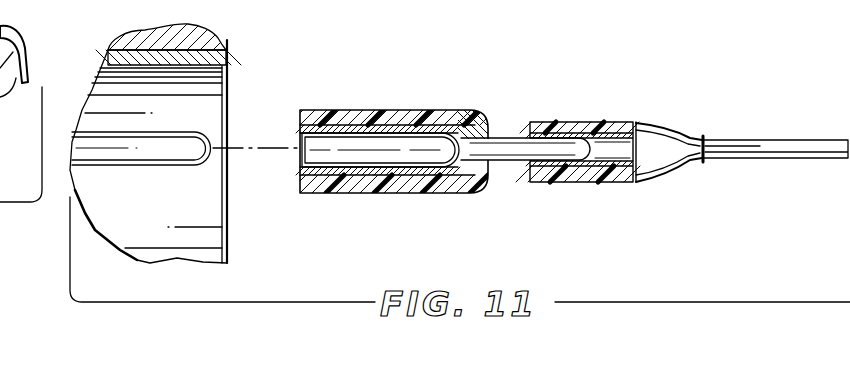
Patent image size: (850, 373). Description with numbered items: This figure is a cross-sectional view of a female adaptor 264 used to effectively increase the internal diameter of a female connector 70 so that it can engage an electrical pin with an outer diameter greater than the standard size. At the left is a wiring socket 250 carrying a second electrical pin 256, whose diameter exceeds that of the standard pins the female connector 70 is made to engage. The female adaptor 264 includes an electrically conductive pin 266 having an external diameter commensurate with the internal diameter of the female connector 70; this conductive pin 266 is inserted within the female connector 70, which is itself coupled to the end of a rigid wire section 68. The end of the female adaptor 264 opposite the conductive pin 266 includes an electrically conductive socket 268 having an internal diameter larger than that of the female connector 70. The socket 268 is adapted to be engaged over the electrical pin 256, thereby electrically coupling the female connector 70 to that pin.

The wiring socket 250 is at (228, 44).
The second electrical pin 256 is at (199, 136).
The female adaptor 264 is at (434, 106).
The electrically conductive socket 268 is at (357, 128).
The electrically conductive pin 266 is at (507, 137).
The female bullet connector 70 is at (612, 124).
The rigid wire section 68 is at (805, 131).